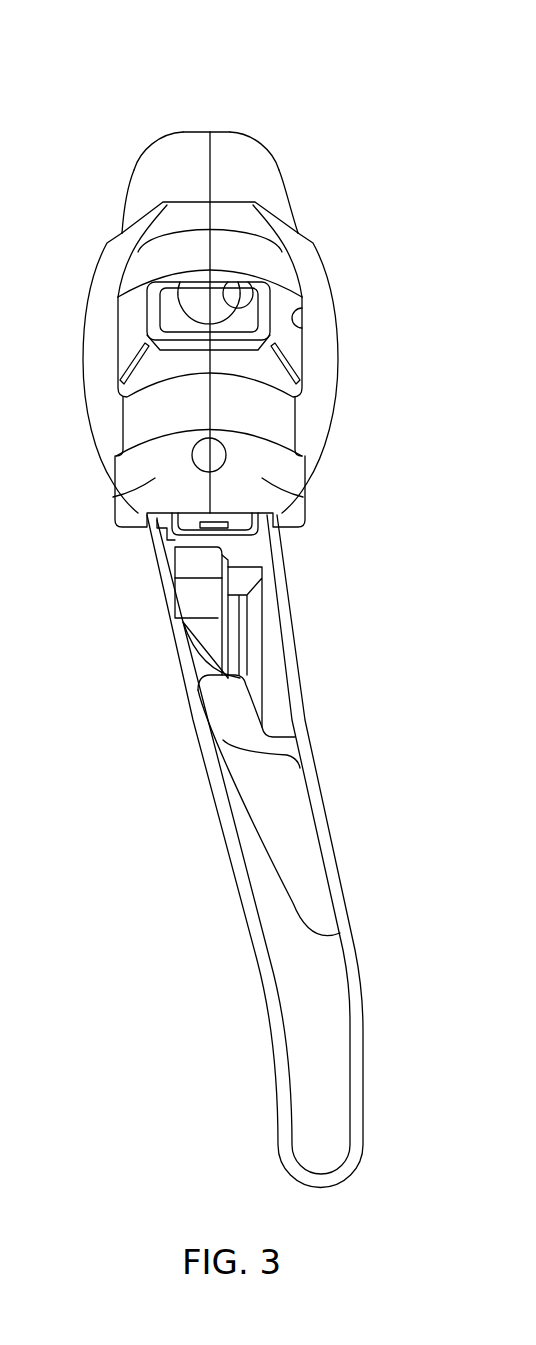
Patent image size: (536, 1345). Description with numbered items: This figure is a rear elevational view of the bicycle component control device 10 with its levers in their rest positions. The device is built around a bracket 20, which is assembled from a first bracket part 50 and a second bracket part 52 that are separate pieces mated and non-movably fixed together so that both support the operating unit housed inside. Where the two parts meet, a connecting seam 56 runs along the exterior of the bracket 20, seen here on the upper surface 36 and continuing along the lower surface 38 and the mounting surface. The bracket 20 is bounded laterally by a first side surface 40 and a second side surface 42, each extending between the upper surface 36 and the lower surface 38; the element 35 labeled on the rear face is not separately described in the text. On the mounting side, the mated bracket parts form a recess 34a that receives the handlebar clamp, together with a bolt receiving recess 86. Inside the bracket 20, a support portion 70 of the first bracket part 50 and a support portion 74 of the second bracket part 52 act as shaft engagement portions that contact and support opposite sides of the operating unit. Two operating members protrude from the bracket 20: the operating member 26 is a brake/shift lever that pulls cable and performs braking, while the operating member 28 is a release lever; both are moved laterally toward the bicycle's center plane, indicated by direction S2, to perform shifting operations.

The bicycle component control device 10 is at (125, 137).
The bracket 20 is at (253, 56).
The operating member 26 is at (215, 802).
The operating member 28 is at (295, 827).
The recess 34a is at (295, 330).
The front cover 35 is at (322, 377).
The upper surface 36 is at (240, 200).
The lower surface 38 is at (187, 537).
The first side surface 40 is at (330, 433).
The second side surface 42 is at (88, 435).
The first bracket part 50 is at (237, 131).
The second bracket part 52 is at (177, 131).
The connecting seam 56 is at (205, 180).
The support portion 70 is at (285, 497).
The support portion 74 is at (125, 492).
The bolt receiving recess 86 is at (260, 307).
The second operating direction S2 is at (273, 893).